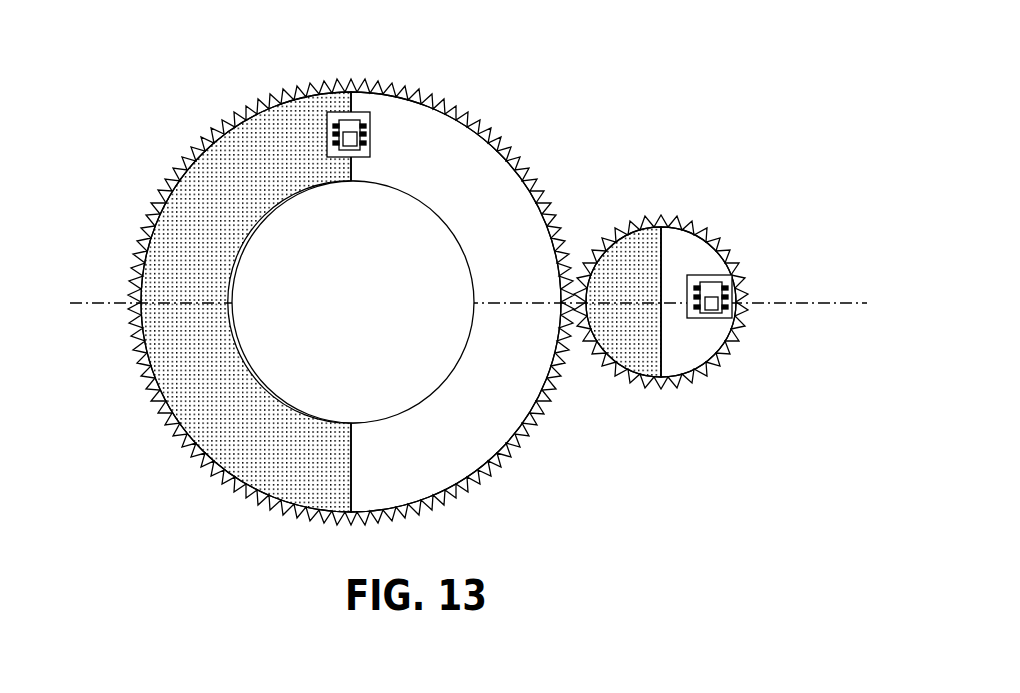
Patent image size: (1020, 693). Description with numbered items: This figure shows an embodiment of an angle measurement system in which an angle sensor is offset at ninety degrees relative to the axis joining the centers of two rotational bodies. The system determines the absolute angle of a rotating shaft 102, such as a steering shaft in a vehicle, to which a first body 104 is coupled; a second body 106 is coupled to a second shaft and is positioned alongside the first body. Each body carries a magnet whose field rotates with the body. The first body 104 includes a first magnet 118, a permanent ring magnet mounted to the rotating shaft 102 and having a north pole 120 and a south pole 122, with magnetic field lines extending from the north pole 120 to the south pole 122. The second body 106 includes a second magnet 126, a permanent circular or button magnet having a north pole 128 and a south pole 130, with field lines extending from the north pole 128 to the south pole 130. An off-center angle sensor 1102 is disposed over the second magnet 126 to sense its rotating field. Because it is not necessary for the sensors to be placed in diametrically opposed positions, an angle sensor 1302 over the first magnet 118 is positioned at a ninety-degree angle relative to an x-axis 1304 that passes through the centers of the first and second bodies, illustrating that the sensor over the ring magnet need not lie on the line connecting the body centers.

The rotating shaft 102 is at (367, 313).
The first body 104 is at (174, 137).
The second body 106 is at (720, 208).
The first magnet 118 is at (350, 90).
The north pole 120 is at (230, 388).
The south pole 122 is at (513, 388).
The second magnet 126 is at (661, 246).
The north pole 128 is at (650, 268).
The south pole 130 is at (705, 268).
The off-center angle sensor 1102 is at (726, 282).
The angle sensor 1302 is at (335, 140).
The x-axis 1304 is at (790, 303).